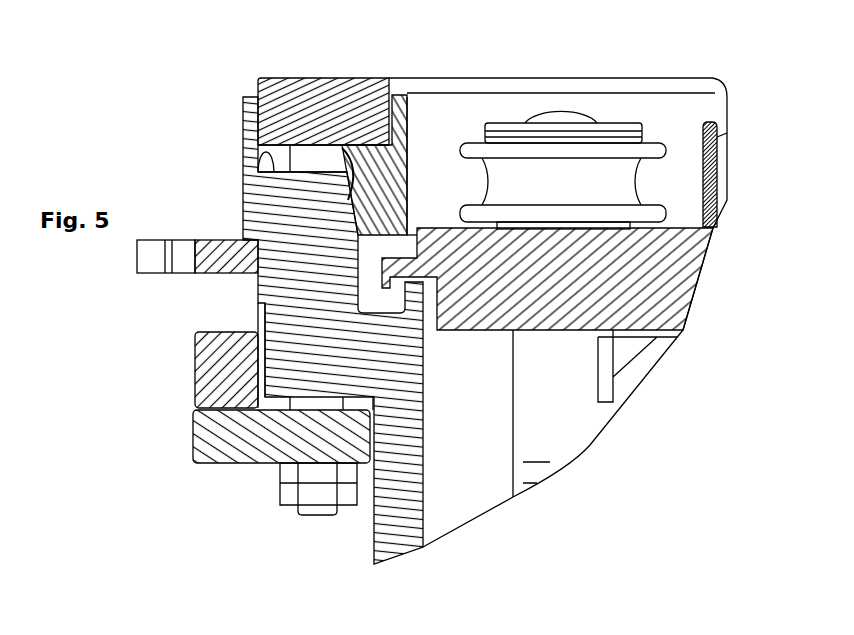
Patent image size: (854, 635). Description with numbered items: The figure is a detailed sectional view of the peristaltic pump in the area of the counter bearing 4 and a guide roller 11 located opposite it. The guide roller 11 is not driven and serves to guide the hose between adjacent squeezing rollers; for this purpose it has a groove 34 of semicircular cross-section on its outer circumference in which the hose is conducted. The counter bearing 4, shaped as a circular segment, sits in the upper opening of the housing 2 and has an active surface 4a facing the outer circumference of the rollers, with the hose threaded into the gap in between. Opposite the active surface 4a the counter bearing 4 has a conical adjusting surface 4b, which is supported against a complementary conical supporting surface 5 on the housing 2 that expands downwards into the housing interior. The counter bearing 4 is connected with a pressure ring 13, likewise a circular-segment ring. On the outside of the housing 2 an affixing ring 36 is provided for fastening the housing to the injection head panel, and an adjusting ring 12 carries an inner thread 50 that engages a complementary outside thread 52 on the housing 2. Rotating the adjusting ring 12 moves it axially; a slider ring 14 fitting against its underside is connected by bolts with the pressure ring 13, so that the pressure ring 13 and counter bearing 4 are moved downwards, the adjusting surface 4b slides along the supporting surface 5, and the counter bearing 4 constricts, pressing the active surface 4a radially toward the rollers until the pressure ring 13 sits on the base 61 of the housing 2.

The housing 2 is at (275, 220).
The counter bearing 4 is at (383, 167).
The active surface 4a is at (408, 170).
The adjusting surface 4b is at (350, 200).
The supporting surface 5 is at (343, 158).
The guide roller 11 is at (575, 127).
The adjusting ring 12 is at (207, 382).
The pressure ring 13 is at (328, 107).
The slider ring 14 is at (233, 440).
The groove 34 is at (647, 180).
The affixing ring 36 is at (213, 263).
The inner thread 50 is at (253, 358).
The outside thread 52 is at (278, 371).
The base 61 is at (243, 153).